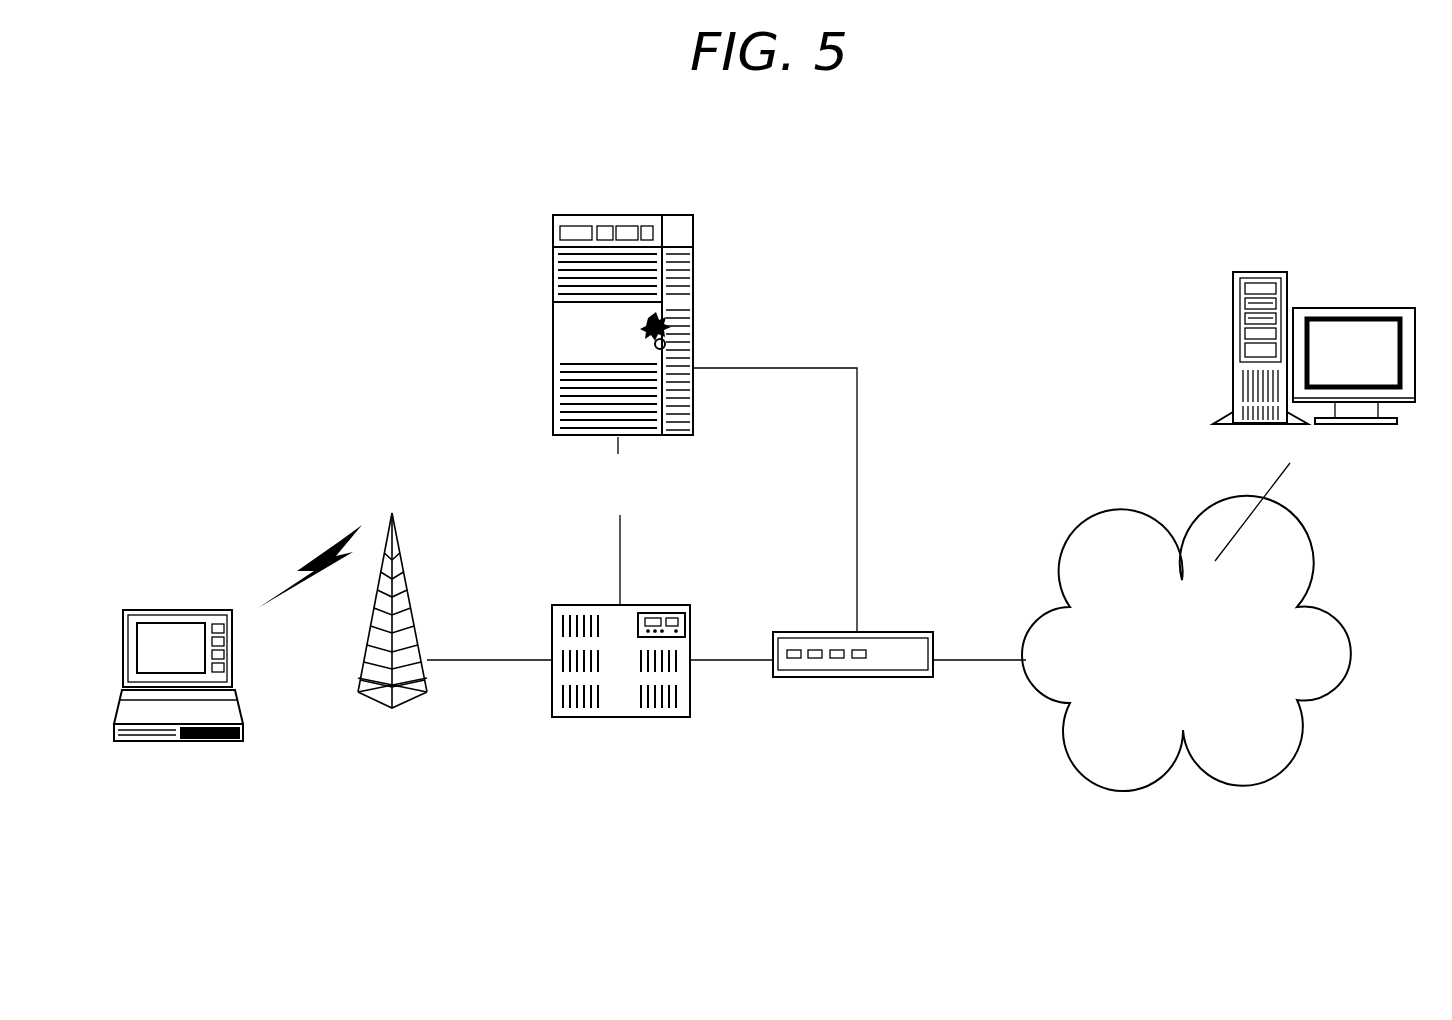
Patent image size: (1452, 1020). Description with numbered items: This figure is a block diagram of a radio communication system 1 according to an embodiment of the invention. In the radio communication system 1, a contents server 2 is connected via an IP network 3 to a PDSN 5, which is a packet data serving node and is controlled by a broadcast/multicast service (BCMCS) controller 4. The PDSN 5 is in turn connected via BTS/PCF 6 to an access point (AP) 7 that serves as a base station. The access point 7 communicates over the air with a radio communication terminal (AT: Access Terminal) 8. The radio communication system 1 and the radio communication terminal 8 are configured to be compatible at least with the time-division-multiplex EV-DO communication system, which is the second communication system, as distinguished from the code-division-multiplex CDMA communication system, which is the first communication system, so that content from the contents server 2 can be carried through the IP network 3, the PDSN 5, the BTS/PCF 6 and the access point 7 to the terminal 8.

The radio communication system 1 is at (862, 156).
The contents server 2 is at (1347, 308).
The IP network 3 is at (1342, 650).
The broadcast/multicast service (BCMCS) controller 4 is at (553, 295).
The PDSN 5 is at (903, 632).
The BTS/PCF 6 is at (552, 630).
The access point (AP) 7 is at (368, 698).
The radio communication terminal (AT: Access Terminal) 8 is at (177, 608).